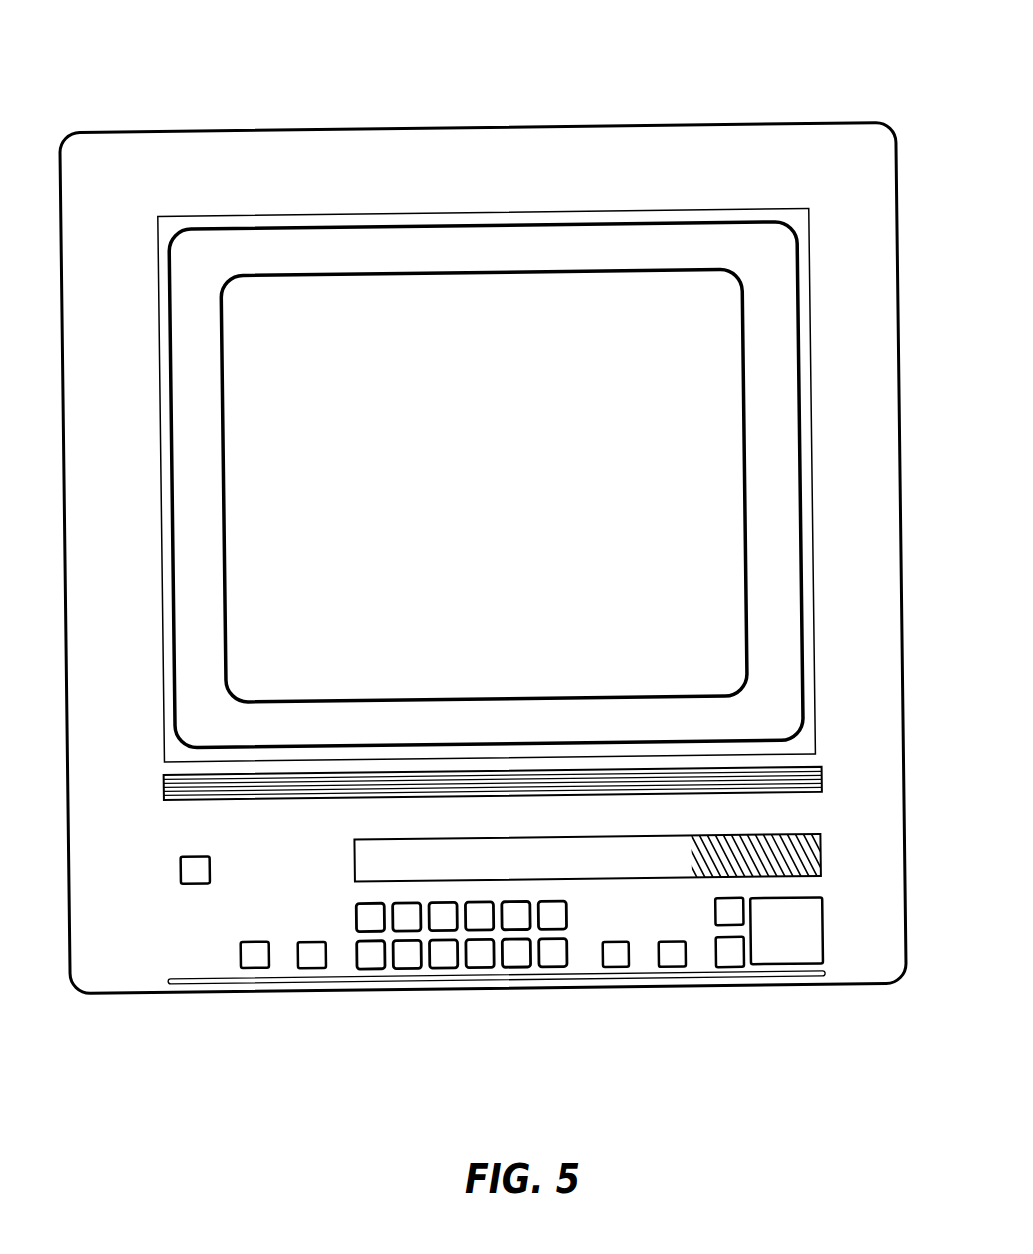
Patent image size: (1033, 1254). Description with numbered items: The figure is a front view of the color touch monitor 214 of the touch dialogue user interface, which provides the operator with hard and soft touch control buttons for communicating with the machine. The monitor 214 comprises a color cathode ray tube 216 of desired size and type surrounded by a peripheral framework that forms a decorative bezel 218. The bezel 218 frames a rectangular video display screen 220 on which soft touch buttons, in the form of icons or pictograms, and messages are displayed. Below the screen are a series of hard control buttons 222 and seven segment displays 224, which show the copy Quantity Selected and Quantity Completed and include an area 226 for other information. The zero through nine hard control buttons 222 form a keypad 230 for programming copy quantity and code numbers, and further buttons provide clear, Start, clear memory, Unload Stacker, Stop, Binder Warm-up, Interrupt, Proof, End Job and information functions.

The color touch monitor 214 is at (500, 97).
The color cathode ray tube 216 is at (629, 287).
The decorative bezel 218 is at (867, 195).
The video display screen 220 is at (701, 285).
The hard control buttons 222 is at (382, 930).
The seven segment displays 224 is at (490, 838).
The area for other information 226 is at (820, 863).
The keypad 230 is at (565, 985).